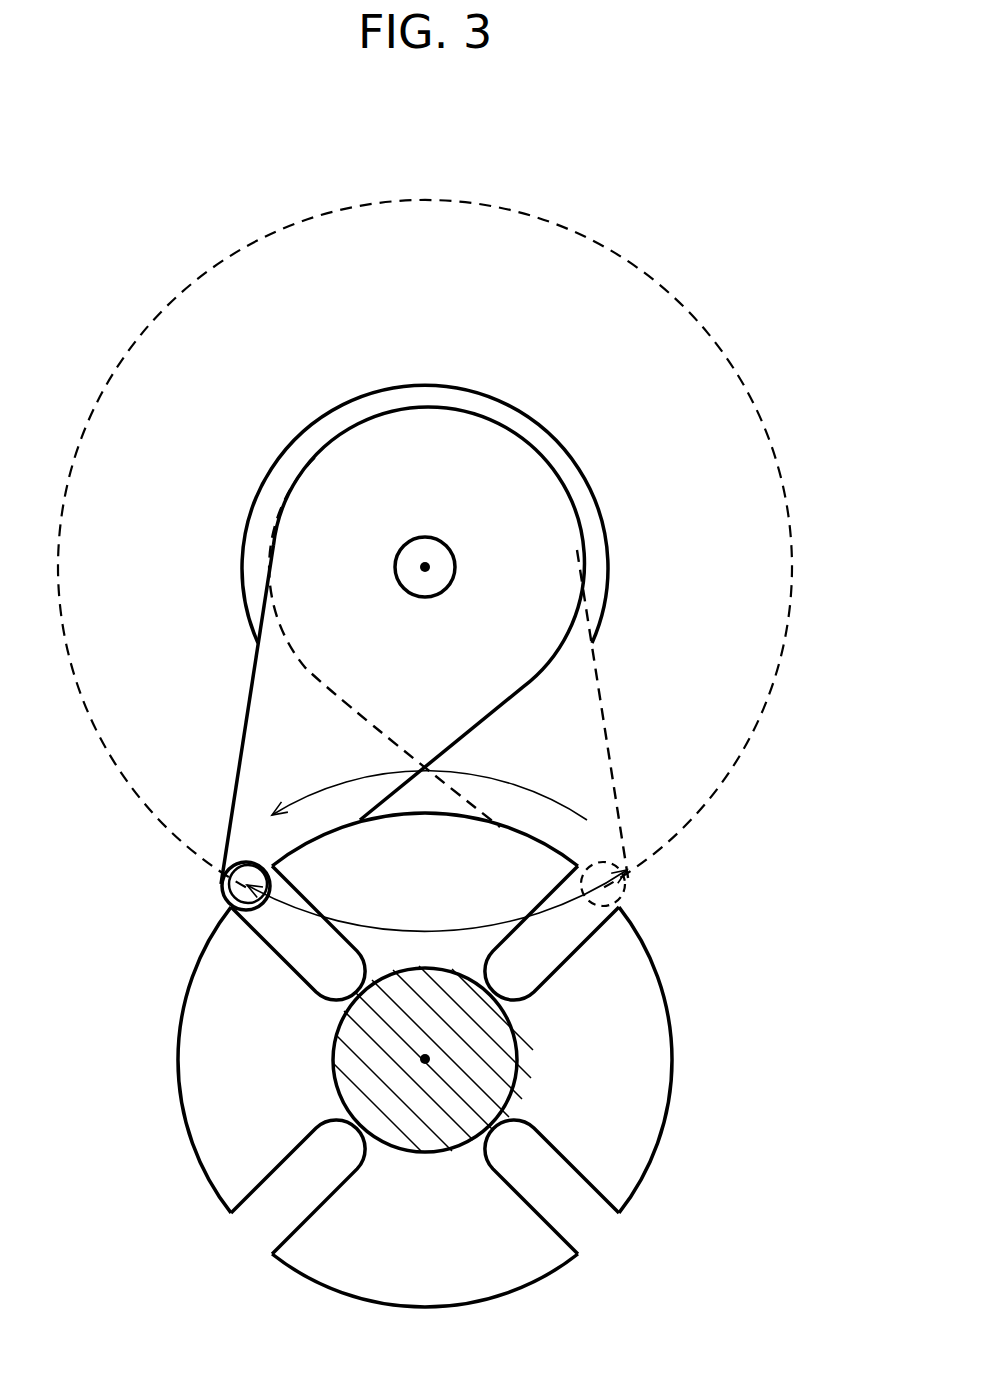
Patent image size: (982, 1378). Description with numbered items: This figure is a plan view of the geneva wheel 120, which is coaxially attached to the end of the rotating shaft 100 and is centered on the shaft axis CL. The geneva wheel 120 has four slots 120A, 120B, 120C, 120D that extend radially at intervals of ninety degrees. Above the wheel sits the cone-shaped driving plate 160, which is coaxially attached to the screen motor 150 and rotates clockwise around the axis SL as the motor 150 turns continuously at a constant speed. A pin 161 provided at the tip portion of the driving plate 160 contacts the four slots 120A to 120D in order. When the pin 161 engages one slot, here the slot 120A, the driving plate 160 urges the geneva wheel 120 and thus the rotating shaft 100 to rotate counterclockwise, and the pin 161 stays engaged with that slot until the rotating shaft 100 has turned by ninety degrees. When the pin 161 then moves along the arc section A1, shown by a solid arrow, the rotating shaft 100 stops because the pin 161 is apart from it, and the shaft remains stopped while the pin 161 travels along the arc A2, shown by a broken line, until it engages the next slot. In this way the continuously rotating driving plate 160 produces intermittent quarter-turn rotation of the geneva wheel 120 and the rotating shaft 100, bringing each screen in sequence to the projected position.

The rotating shaft 100 is at (488, 1060).
The geneva wheel 120 is at (677, 1057).
The slot 120A is at (550, 972).
The slot 120B is at (560, 1194).
The slot 120C is at (287, 1140).
The slot 120D is at (303, 978).
The screen motor 150 is at (558, 438).
The driving plate 160 is at (470, 418).
The pin 161 is at (223, 889).
The axis SL is at (428, 566).
The center axis of the rotating shaft CL is at (423, 1058).
The arc section A1 is at (427, 928).
The arc A2 is at (147, 328).